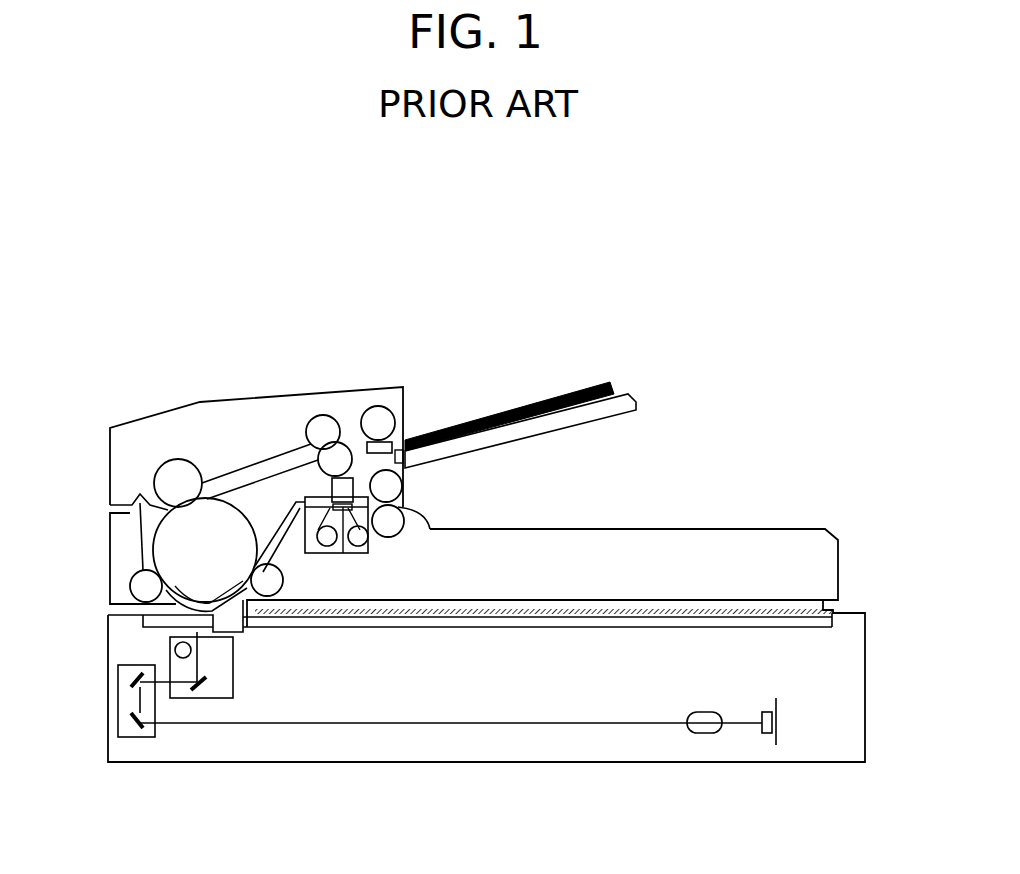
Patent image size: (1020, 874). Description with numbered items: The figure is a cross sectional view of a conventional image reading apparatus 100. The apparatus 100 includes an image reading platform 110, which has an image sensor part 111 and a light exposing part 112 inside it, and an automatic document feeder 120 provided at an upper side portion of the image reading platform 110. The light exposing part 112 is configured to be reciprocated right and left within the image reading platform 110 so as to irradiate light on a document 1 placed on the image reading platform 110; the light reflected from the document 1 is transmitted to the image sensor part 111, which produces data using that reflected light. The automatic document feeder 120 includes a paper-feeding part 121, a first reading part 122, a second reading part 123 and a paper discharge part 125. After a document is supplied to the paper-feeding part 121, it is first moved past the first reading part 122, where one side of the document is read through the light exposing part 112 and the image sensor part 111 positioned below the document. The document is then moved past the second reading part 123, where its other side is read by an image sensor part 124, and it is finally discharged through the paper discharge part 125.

The image reading apparatus 100 is at (703, 276).
The image reading platform 110 is at (850, 777).
The image sensor part 111 is at (770, 733).
The light exposing part 112 is at (235, 683).
The automatic document feeder 120 is at (409, 360).
The paper-feeding part 121 is at (378, 414).
The first reading part 122 is at (147, 600).
The second reading part 123 is at (384, 491).
The image sensor part 124 is at (328, 428).
The paper discharge part 125 is at (430, 529).
The document 1 is at (653, 607).